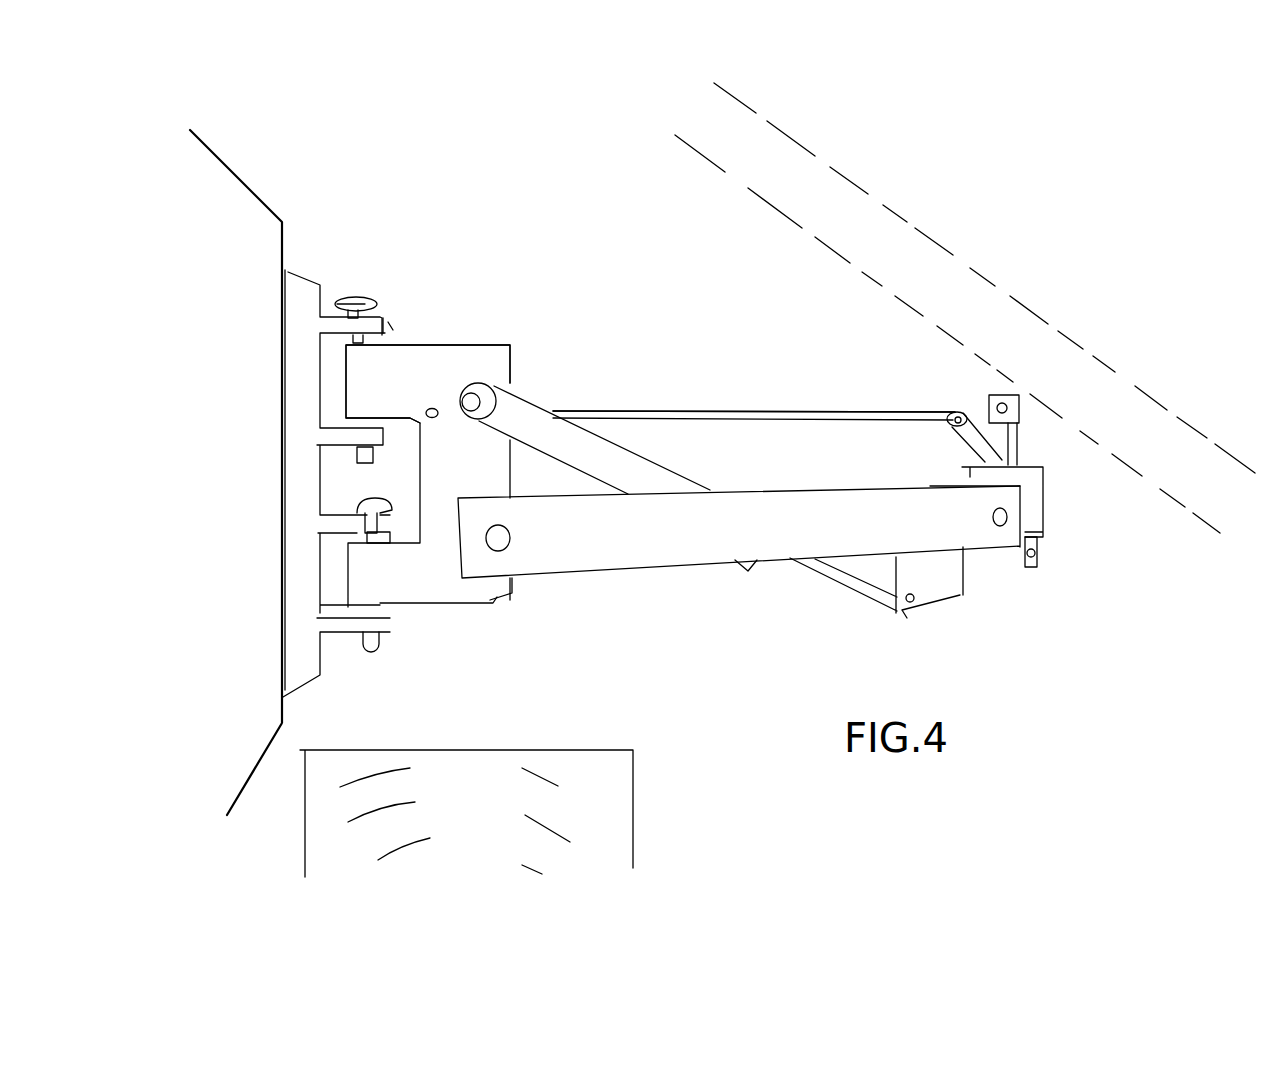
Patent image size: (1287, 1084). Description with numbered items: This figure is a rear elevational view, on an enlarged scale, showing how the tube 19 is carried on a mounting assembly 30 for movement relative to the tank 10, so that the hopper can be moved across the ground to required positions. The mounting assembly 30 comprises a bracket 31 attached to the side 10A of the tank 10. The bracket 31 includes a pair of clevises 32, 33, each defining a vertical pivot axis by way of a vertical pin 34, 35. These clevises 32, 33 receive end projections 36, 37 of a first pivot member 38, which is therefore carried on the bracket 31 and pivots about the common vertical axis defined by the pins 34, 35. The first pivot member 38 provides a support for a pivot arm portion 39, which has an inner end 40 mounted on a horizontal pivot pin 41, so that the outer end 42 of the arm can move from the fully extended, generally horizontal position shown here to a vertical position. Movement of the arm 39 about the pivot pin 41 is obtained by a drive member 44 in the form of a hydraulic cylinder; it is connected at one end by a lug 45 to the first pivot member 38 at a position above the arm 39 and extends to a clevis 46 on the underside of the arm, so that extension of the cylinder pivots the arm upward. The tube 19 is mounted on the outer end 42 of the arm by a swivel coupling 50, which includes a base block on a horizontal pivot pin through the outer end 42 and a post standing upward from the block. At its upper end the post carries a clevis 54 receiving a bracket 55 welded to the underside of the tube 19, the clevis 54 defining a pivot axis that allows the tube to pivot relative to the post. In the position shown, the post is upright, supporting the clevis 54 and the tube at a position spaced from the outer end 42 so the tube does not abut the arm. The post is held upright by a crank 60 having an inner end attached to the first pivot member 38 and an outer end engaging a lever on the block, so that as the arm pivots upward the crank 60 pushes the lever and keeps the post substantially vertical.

The tank 10 is at (252, 190).
The side of the tank 10A is at (282, 235).
The tube 19 is at (928, 234).
The mounting assembly 30 is at (750, 392).
The bracket 31 is at (300, 290).
The clevis 32 is at (390, 330).
The clevis 33 is at (383, 623).
The vertical pin 34 is at (377, 307).
The vertical pin 35 is at (380, 498).
The end projection 36 is at (390, 557).
The end projection 37 is at (378, 377).
The first pivot member 38 is at (512, 348).
The pivot arm portion 39 is at (817, 510).
The inner end of the arm 40 is at (477, 563).
The horizontal pivot pin 41 is at (505, 540).
The outer end of the arm 42 is at (995, 547).
The drive member 44 is at (753, 565).
The lug 45 is at (494, 386).
The clevis 46 is at (907, 613).
The swivel coupling 50 is at (1037, 450).
The clevis 54 is at (998, 395).
The bracket 55 is at (1018, 436).
The crank 60 is at (778, 413).